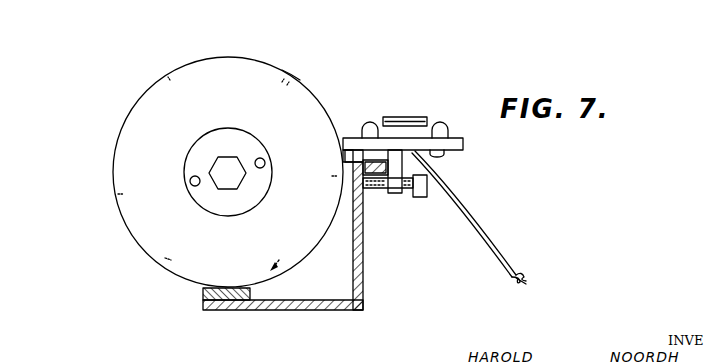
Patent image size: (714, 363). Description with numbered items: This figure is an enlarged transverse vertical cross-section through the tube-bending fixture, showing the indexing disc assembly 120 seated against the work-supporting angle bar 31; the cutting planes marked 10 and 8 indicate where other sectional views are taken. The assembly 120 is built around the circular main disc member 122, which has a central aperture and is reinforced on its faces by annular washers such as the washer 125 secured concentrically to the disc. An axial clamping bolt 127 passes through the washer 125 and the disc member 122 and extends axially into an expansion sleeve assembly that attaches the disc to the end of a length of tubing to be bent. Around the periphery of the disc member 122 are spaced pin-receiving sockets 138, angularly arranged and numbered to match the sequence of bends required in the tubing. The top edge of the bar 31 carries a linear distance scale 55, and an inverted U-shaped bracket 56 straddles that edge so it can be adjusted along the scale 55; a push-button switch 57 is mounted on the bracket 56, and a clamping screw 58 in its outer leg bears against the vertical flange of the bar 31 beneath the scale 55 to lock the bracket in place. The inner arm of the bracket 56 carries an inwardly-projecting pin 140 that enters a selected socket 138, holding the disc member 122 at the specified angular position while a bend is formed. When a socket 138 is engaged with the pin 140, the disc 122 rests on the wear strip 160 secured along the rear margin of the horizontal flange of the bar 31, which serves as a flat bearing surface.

The section line 10- 10 is at (160, 22).
The section line 8- 8 is at (228, 80).
The indexing disc assembly 120 is at (300, 50).
The circular main disc member 122 is at (128, 146).
The annular reinforcing washer 125 is at (208, 148).
The axial clamping bolt 127 is at (226, 163).
The pin-receiving socket 138 is at (300, 81).
The inwardly-projecting pin 140 is at (332, 179).
The work-supporting bar 31 is at (364, 270).
The wear strip 160 is at (203, 292).
The push-button switch 57 is at (443, 132).
The inverted U-shaped bracket 56 is at (355, 155).
The linear distance scale 55 is at (373, 167).
The clamping screw 58 is at (413, 197).